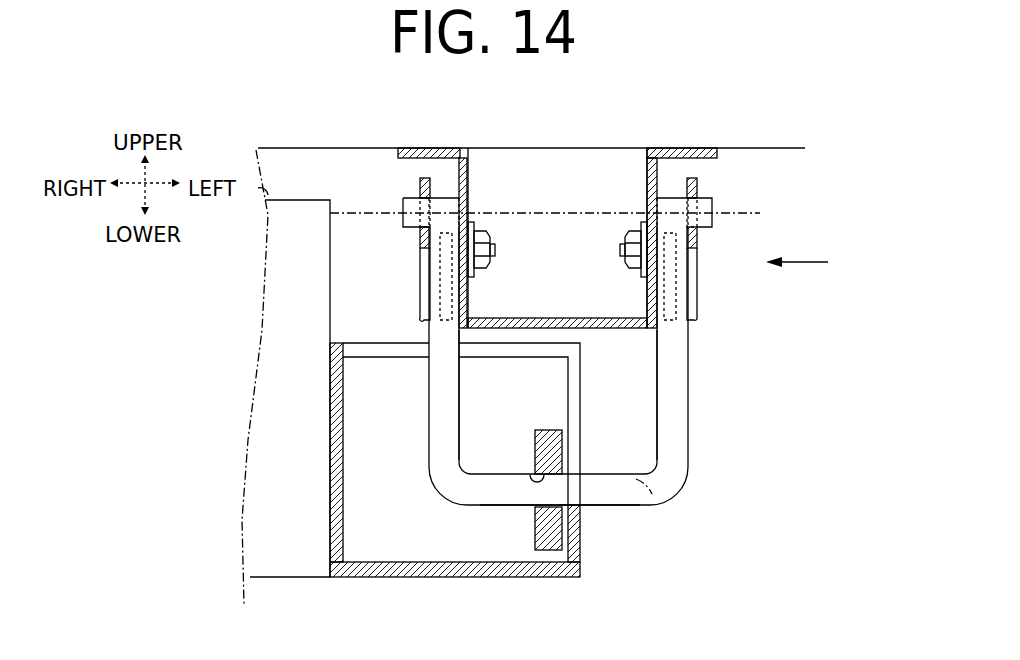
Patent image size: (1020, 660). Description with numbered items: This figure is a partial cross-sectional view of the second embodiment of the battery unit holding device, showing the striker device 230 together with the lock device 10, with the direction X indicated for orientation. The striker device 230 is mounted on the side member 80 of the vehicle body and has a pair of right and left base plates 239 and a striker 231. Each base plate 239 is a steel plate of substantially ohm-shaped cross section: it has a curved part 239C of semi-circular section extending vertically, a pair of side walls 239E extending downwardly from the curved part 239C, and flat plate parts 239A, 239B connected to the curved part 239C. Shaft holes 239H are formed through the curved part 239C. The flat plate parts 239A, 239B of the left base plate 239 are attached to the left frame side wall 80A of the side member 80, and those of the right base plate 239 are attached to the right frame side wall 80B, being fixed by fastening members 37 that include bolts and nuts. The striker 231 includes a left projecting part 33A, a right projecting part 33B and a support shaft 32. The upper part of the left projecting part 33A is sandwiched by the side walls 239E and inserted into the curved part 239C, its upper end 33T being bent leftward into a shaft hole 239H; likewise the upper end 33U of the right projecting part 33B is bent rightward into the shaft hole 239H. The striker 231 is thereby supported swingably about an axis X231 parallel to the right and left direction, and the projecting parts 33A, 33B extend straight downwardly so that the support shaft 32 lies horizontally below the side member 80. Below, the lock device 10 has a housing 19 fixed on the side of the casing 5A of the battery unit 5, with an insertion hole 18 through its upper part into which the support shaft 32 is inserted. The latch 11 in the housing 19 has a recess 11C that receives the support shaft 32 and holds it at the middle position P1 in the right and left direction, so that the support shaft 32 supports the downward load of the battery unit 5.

The battery unit 5 is at (282, 444).
The casing 5A is at (262, 193).
The lock device 10 is at (481, 485).
The latch 11 is at (548, 551).
The recess 11C is at (535, 470).
The insertion hole 18 is at (576, 388).
The housing 19 is at (441, 568).
The support shaft 32 is at (609, 496).
The left projecting part 33A is at (670, 347).
The right projecting part 33B is at (442, 397).
The upper end of left projecting part 33T is at (713, 218).
The upper end of right projecting part 33U is at (404, 220).
The fastening member 37 is at (493, 249).
The side member 80 is at (531, 212).
The left frame side wall 80A is at (648, 210).
The right frame side wall 80B is at (469, 185).
The striker device 230 is at (575, 382).
The striker 231 is at (688, 436).
The base plate 239 is at (539, 208).
The flat plate part 239A is at (558, 243).
The flat plate part 239B is at (668, 114).
The curved part 239C is at (419, 186).
The side wall 239E is at (424, 300).
The shaft hole 239H is at (418, 207).
The middle position P1 is at (555, 494).
The direction X is at (807, 267).
The axis X231 is at (569, 214).